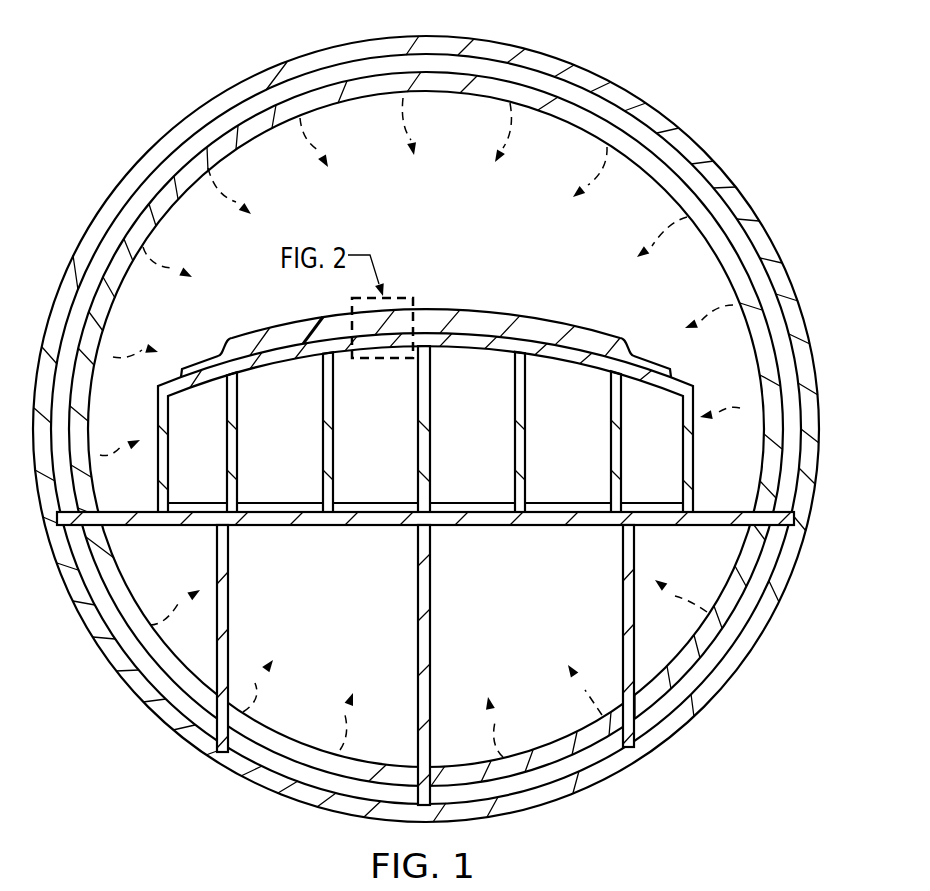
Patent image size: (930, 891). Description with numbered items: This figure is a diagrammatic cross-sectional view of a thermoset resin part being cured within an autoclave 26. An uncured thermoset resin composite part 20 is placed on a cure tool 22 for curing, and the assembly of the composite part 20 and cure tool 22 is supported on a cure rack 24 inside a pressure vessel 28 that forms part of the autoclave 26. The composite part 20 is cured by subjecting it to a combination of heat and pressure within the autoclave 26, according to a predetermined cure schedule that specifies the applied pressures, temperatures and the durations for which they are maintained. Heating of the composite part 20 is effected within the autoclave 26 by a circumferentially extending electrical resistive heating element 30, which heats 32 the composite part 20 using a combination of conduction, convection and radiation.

The thermoset resin composite part 20 is at (477, 314).
The cure tool 22 is at (157, 404).
The cure rack 24 is at (714, 520).
The autoclave 26 is at (426, 421).
The pressure vessel 28 is at (582, 80).
The electrical resistive heating element 30 is at (400, 778).
The heat 32 is at (405, 115).